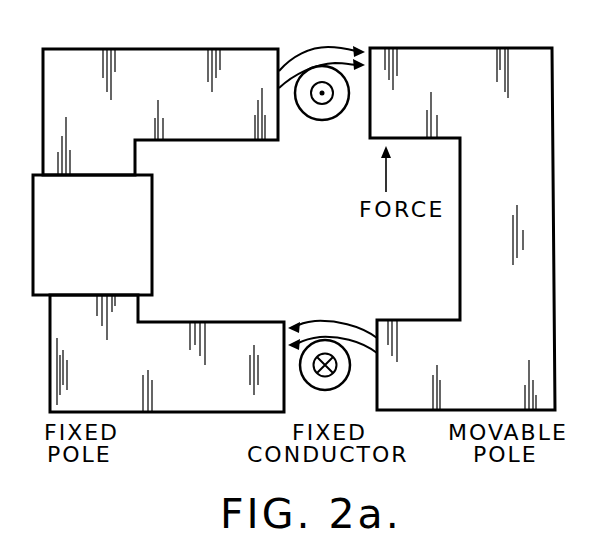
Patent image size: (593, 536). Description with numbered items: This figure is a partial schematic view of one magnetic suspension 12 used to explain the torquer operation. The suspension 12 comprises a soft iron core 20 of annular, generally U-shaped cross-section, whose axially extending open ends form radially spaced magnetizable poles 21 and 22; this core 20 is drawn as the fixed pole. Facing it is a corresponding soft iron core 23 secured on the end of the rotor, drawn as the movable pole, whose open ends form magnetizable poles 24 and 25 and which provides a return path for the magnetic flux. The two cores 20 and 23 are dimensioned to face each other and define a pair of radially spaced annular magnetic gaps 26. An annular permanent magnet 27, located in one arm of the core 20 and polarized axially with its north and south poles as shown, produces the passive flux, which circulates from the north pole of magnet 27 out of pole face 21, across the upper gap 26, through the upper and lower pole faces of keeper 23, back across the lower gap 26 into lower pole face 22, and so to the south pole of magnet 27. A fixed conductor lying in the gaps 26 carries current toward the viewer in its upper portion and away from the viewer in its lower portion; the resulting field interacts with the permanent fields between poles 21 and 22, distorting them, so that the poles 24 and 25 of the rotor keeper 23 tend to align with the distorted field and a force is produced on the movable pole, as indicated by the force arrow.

The magnetic suspension 12 is at (158, 206).
The soft iron core 20 is at (78, 48).
The magnetizable pole 21 is at (213, 133).
The magnetizable pole 22 is at (231, 327).
The soft iron core (rotor keeper) 23 is at (462, 205).
The magnetizable pole 24 is at (455, 25).
The magnetizable pole 25 is at (412, 320).
The annular magnetic gap 26 is at (313, 47).
The annular permanent magnet 27 is at (153, 226).